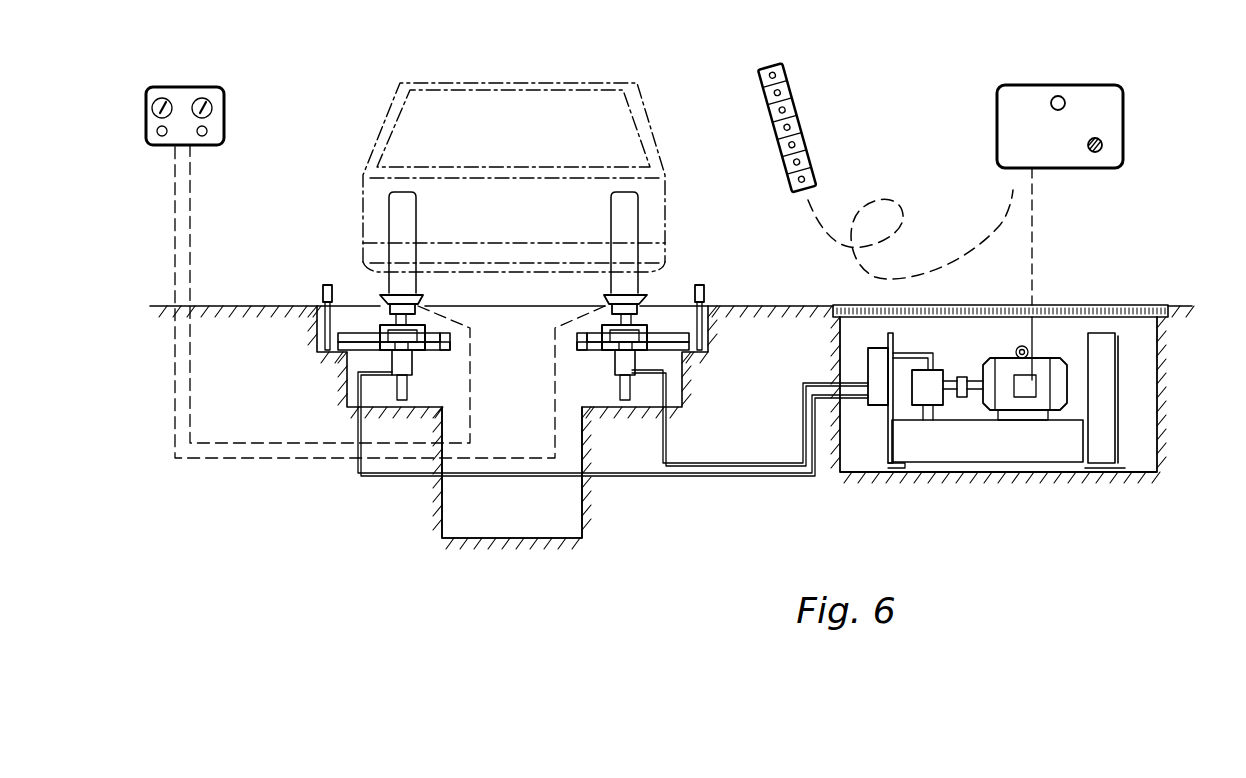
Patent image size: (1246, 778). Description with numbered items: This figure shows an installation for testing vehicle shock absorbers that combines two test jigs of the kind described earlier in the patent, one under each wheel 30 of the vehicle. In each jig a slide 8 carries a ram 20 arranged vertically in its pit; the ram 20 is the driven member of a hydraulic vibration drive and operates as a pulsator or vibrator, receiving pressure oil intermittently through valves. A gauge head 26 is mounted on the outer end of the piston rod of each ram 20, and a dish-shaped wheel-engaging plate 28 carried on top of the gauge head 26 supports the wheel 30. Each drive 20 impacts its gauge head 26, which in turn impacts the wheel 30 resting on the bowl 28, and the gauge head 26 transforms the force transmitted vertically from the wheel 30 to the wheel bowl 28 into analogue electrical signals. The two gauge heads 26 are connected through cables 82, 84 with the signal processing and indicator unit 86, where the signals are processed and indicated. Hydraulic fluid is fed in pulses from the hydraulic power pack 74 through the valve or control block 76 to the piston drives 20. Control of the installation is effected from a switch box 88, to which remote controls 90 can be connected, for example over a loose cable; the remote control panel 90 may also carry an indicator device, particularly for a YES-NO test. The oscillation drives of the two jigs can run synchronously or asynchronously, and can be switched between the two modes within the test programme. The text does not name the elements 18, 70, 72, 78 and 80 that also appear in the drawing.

The slide 8 is at (383, 343).
The sensor post 18 is at (322, 290).
The ram 20 is at (412, 372).
The gauge head 26 is at (420, 310).
The wheel-engaging plate 28 is at (423, 295).
The wheel 30 is at (385, 287).
The central pit 70 is at (583, 512).
The guide rail 72 is at (337, 335).
The hydraulic power pack 74 is at (943, 428).
The control block 76 is at (878, 385).
The hydraulic line 78 is at (727, 474).
The hydraulic line 80 is at (783, 464).
The cable 82 is at (470, 362).
The cable 84 is at (555, 362).
The signal processing and indicator unit 86 is at (205, 98).
The switch box 88 is at (1015, 110).
The remote control 90 is at (790, 88).